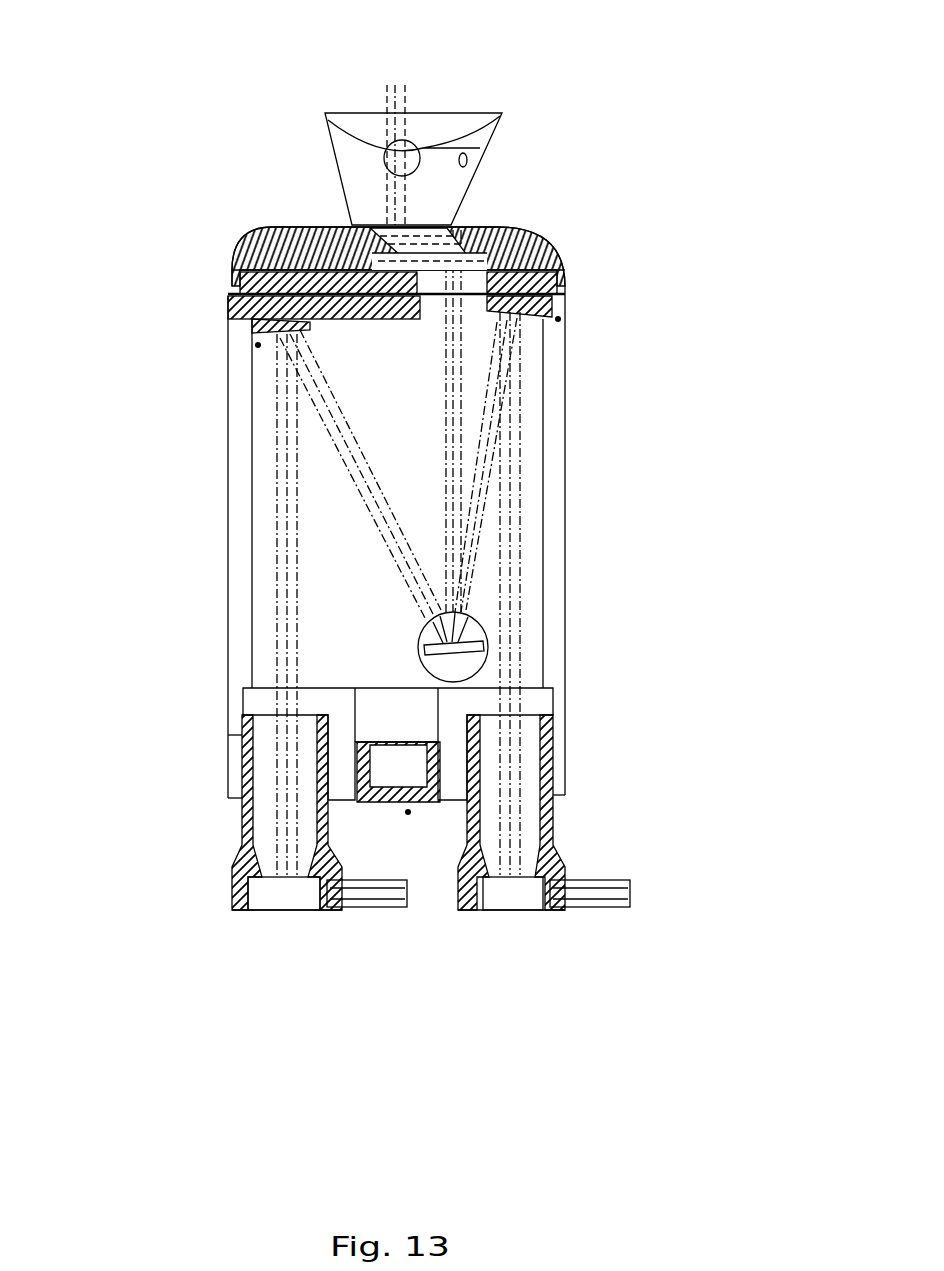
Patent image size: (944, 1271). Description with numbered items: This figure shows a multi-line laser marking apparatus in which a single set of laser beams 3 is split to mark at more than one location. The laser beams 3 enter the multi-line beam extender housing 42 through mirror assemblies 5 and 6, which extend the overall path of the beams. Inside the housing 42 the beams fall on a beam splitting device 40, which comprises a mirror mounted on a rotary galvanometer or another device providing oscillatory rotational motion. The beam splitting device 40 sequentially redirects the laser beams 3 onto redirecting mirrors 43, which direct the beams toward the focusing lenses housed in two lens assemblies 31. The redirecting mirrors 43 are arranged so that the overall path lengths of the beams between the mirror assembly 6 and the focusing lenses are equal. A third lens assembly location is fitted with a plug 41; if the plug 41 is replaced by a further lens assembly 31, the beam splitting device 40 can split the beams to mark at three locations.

The laser beams 3 is at (413, 90).
The mirror assembly 5 is at (402, 255).
The mirror assembly 6 is at (480, 227).
The redirecting mirrors 43 is at (258, 345).
The multi-line beam extender housing 42 is at (556, 556).
The beam splitting device 40 is at (480, 649).
The lens assemblies 31 is at (236, 815).
The plug 41 is at (408, 812).